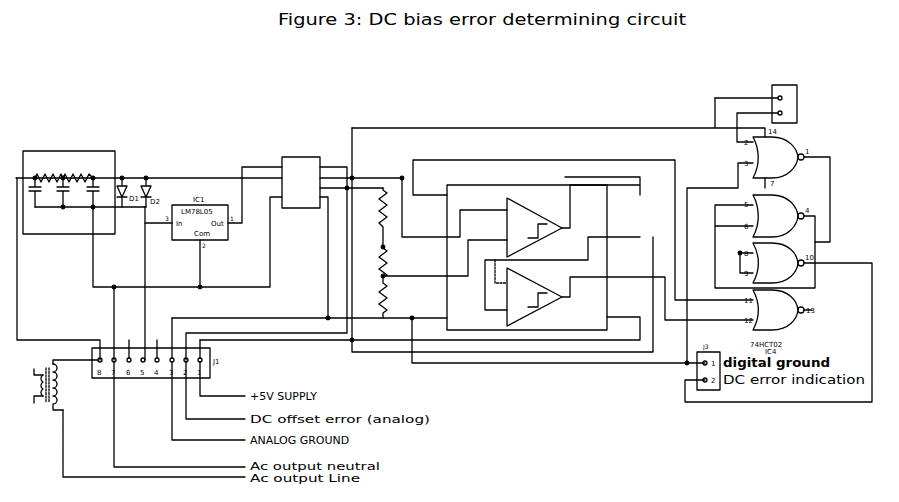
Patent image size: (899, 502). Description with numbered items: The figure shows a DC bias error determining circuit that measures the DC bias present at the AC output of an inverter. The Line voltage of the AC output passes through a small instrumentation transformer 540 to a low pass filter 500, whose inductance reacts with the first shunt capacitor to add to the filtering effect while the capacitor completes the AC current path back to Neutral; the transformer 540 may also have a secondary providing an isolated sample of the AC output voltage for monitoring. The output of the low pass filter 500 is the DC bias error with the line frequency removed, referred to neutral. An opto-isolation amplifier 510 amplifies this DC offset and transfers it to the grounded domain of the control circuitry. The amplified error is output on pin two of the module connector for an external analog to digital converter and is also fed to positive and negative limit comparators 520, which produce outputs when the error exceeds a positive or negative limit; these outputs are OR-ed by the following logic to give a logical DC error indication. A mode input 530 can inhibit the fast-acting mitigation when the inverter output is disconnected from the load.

The low pass filter 500 is at (90, 128).
The opto-isolation amplifier 510 is at (318, 107).
The positive and negative limit comparators 520 is at (577, 90).
The mode input 530 is at (772, 90).
The instrumentation transformer 540 is at (53, 416).